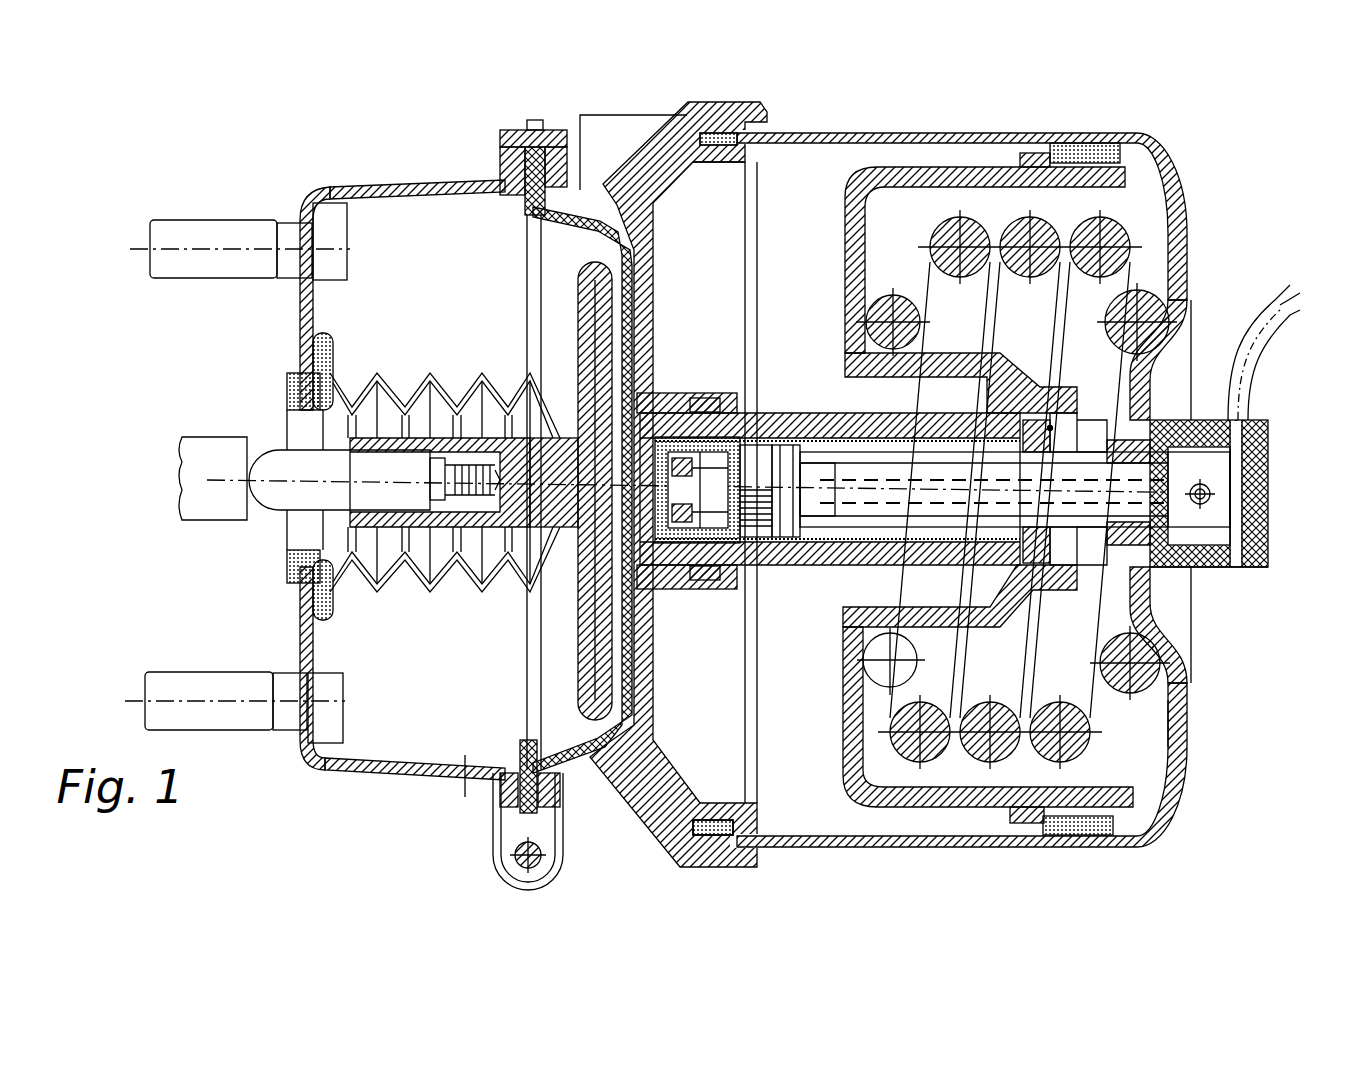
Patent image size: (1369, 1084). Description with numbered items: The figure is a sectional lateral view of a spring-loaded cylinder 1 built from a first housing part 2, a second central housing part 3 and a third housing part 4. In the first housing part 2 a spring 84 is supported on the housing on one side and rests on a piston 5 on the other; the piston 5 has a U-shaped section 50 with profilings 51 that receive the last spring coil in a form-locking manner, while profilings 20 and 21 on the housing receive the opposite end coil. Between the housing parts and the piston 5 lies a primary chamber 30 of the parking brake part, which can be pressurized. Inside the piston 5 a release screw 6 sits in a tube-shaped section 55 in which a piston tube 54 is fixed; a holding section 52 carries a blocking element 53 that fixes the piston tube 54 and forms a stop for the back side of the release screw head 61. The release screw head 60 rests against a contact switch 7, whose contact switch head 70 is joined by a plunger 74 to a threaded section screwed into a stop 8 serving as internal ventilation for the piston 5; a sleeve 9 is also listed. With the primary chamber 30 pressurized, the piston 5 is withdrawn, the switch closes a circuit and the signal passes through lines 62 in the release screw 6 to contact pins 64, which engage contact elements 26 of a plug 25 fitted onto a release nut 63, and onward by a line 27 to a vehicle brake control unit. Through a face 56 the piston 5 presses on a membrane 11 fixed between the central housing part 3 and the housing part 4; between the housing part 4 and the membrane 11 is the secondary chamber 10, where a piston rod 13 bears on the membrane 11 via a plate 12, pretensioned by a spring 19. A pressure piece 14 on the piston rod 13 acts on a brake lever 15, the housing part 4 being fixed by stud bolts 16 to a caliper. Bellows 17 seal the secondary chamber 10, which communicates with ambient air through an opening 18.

The spring-loaded cylinder 1 is at (1205, 134).
The first housing part 2 is at (866, 160).
The second central housing part 3 is at (645, 133).
The third housing part 4 is at (450, 181).
The piston 5 is at (917, 807).
The release screw 6 is at (1090, 530).
The contact switch 7 is at (770, 565).
The stop 8 is at (712, 589).
The sleeve 9 is at (822, 600).
The secondary chamber 10 is at (403, 287).
The membrane 11 is at (520, 213).
The plate 12 is at (497, 750).
The piston rod 13 is at (440, 600).
The pressure piece 14 is at (327, 493).
The brake lever 15 is at (210, 445).
The stud bolts 16 is at (213, 237).
The bellows 17 is at (413, 640).
The opening 18 is at (463, 782).
The spring 19 is at (453, 337).
The profiling 20 is at (1192, 307).
The profiling 21 is at (1190, 700).
The plug 25 is at (1262, 425).
The contact elements 26 is at (1280, 507).
The line 27 is at (1232, 340).
The primary chamber 30 is at (690, 238).
The U-shaped section 50 is at (870, 280).
The profilings 51 is at (925, 275).
The holding section 52 is at (1042, 565).
The blocking element 53 is at (1025, 567).
The piston tube 54 is at (865, 662).
The tube-shaped section 55 is at (838, 589).
The face 56 is at (650, 500).
The release screw head 60 is at (777, 447).
The back side of release screw head 61 is at (837, 480).
The lines 62 is at (836, 473).
The release nut 63 is at (1210, 573).
The contact pins 64 is at (1273, 530).
The contact switch head 70 is at (745, 400).
The plunger 74 is at (777, 507).
The spring 84 is at (1112, 225).